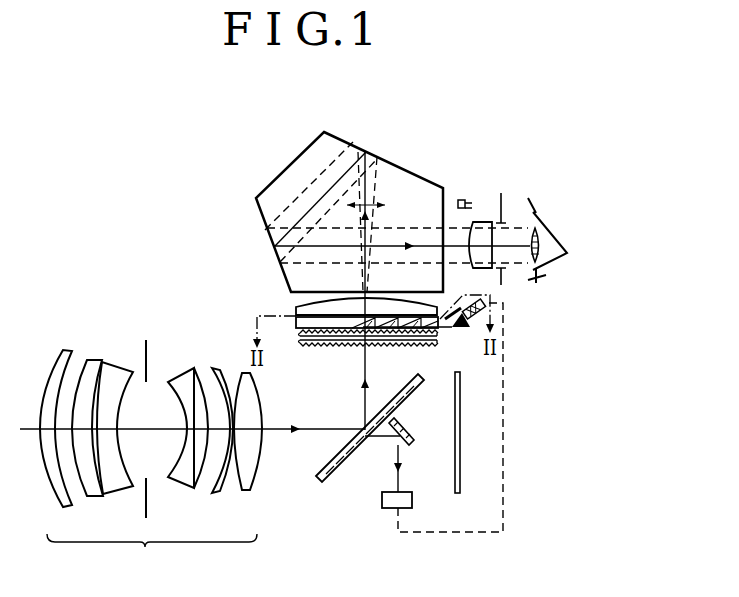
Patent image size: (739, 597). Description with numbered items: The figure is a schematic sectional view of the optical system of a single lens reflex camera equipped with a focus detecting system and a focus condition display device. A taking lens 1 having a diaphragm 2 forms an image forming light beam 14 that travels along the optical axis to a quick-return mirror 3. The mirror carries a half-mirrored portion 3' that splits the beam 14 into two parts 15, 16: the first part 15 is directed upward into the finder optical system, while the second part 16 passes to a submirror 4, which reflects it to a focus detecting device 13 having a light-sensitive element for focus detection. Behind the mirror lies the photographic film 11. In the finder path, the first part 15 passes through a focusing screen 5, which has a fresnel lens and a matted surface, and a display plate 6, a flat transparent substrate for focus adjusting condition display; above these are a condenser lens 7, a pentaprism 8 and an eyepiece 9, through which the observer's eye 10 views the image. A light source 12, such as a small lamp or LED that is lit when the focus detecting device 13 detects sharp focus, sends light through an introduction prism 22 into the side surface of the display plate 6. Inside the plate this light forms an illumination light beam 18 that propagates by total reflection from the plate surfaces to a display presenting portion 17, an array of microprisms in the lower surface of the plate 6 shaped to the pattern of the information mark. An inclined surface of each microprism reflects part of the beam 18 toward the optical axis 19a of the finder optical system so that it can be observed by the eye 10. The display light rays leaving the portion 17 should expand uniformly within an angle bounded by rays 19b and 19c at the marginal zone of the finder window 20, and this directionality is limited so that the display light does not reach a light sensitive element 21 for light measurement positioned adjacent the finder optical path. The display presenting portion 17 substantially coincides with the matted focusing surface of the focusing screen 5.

The taking lens 1 is at (155, 583).
The diaphragm 2 is at (147, 340).
The quick-return mirror 3 is at (369, 475).
The half-mirrored portion 3' is at (367, 477).
The submirror 4 is at (411, 448).
The focusing screen 5 is at (296, 346).
The display plate 6 is at (296, 320).
The condenser lens 7 is at (296, 302).
The pentaprism 8 is at (258, 215).
The eyepiece 9 is at (480, 222).
The observer's eye 10 is at (550, 241).
The photographic film 11 is at (461, 402).
The light source 12 is at (478, 316).
The focus detecting device 13 is at (396, 510).
The image forming light beam 14 is at (293, 434).
The first part of the image forming light beam 15 is at (363, 403).
The second part of the image forming light beam 16 is at (397, 460).
The display presenting portion 17 is at (374, 320).
The illumination light beam 18 is at (471, 324).
The optical axis of the finder optical system 19a is at (367, 157).
The marginal ray 19b is at (358, 151).
The marginal ray 19c is at (378, 181).
The finder window 20 is at (513, 231).
The light sensitive element for light measurement 21 is at (465, 199).
The introduction prism 22 is at (457, 416).